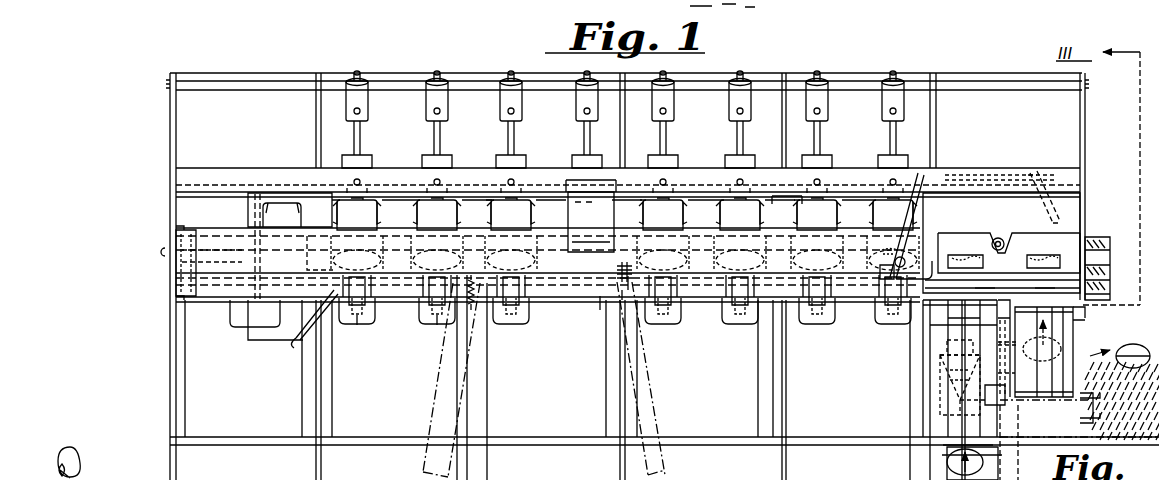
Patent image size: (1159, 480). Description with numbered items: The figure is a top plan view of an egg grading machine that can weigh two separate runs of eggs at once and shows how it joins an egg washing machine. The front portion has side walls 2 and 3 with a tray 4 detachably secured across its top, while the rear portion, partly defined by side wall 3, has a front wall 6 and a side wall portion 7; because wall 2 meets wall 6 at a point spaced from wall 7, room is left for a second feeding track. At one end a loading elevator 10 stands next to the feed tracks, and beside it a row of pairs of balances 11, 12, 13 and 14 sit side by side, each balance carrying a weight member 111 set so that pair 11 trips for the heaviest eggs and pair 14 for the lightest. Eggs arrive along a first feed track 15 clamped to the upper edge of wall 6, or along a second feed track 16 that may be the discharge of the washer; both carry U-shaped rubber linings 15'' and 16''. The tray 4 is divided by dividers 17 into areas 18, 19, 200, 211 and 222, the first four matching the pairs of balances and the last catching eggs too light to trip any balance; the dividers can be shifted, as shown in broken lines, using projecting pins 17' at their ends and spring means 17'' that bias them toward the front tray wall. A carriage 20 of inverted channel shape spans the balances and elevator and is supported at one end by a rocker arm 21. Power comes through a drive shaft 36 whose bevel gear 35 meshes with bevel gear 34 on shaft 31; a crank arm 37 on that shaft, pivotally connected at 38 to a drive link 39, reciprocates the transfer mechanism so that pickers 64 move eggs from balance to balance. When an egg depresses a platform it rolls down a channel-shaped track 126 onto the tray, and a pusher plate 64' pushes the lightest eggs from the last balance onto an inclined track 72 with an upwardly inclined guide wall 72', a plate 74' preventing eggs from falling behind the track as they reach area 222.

The side wall 2 is at (1004, 348).
The side wall 3 is at (170, 331).
The tray 4 is at (216, 358).
The front wall 6 is at (1075, 322).
The side wall portion 7 is at (1083, 128).
The loading elevator 10 is at (1046, 248).
The pair of balances 11 is at (852, 300).
The pair of balances 12 is at (718, 265).
The pair of balances 13 is at (560, 258).
The pair of balances 14 is at (398, 318).
The first feed track 15 is at (988, 463).
The U-shaped lining 15'' is at (924, 457).
The second feed track 16 is at (1076, 352).
The U-shaped lining 16'' is at (1102, 392).
The divider 17 is at (574, 371).
The projecting pin 17' is at (622, 261).
The spring means 17'' is at (585, 327).
The tray area 18 is at (865, 395).
The tray area 19 is at (717, 395).
The carriage 20 is at (470, 241).
The rocker arm 21 is at (182, 258).
The shaft 31 is at (951, 313).
The bevel gear 34 is at (945, 395).
The second bevel gear 35 is at (960, 420).
The drive shaft 36 is at (1005, 426).
The crank arm 37 is at (989, 291).
The pivotal connection 38 is at (936, 275).
The drive link 39 is at (1048, 291).
The picker 64 is at (350, 339).
The pusher plate 64' is at (240, 313).
The inclined track 72 is at (250, 326).
The guide wall 72' is at (296, 327).
The plate 74' is at (265, 247).
The weight member 111 is at (558, 110).
The channel-shaped track 126 is at (812, 330).
The tray area 200 is at (581, 397).
The tray area 211 is at (422, 392).
The tray area 222 is at (284, 392).